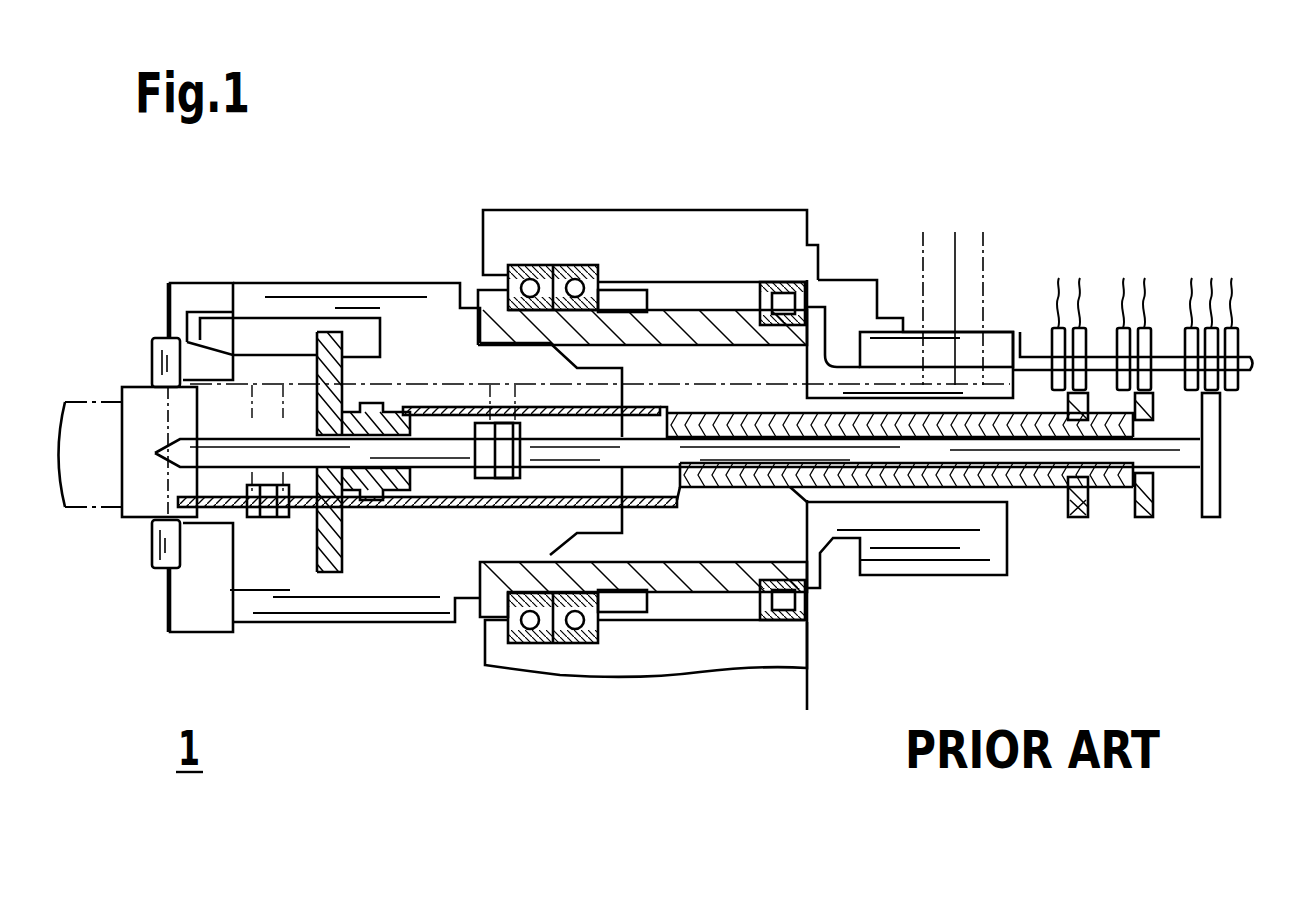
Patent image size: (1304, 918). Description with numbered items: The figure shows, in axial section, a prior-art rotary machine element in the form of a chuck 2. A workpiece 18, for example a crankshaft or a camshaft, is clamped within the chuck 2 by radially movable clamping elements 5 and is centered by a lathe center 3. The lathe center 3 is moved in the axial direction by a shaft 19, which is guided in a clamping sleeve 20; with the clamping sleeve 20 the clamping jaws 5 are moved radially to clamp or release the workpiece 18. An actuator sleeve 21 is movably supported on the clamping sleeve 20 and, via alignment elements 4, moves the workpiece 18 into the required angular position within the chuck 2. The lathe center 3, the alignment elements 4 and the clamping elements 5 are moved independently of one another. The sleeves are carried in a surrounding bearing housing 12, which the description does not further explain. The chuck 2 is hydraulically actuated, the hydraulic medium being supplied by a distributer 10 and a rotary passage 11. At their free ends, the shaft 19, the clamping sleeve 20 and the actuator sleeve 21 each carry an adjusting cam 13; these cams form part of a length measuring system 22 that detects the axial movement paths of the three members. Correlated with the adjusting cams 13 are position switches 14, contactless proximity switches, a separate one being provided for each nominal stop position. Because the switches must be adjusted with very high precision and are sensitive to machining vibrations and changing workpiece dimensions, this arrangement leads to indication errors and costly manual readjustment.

The chuck 2 is at (301, 284).
The lathe center 3 is at (167, 457).
The alignment elements 4 is at (230, 510).
The clamping elements 5 is at (160, 543).
The distributer 10 is at (909, 348).
The rotary passage 11 is at (970, 390).
The bearing housing 12 is at (655, 212).
The adjusting cams 13 is at (1087, 513).
The position switches 14 is at (1146, 266).
The workpiece 18 is at (75, 425).
The shaft 19 is at (905, 452).
The clamping sleeve 20 is at (1025, 470).
The actuator sleeve 21 is at (820, 543).
The length measuring system 22 is at (1294, 239).